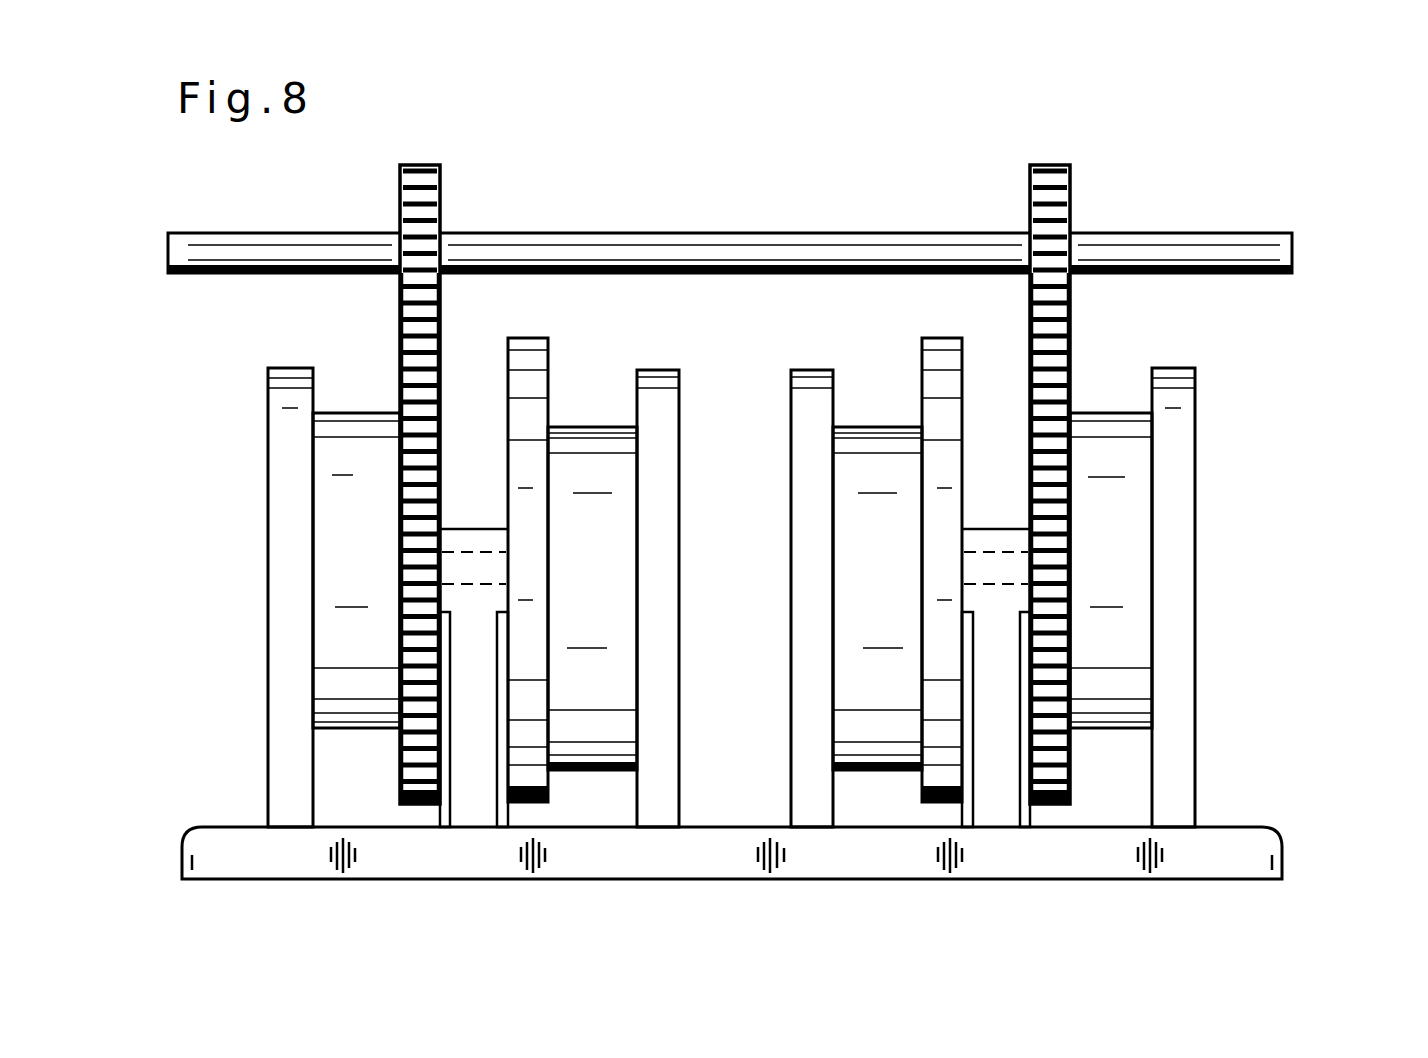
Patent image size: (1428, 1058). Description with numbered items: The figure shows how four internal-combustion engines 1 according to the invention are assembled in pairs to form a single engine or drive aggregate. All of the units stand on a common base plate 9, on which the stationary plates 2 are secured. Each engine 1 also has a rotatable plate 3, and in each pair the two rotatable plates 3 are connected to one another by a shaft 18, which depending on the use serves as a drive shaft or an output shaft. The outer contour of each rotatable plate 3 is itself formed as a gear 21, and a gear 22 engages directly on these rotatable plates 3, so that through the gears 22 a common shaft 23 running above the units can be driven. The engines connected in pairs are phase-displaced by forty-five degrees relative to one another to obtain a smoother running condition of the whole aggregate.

The internal-combustion engine 1 is at (265, 418).
The stationary plate 2 is at (297, 657).
The rotatable plate 3 is at (417, 450).
The base plate 9 is at (1248, 835).
The shaft 18 is at (475, 562).
The gear 21 is at (423, 368).
The gear 22 is at (423, 166).
The common shaft 23 is at (1185, 260).